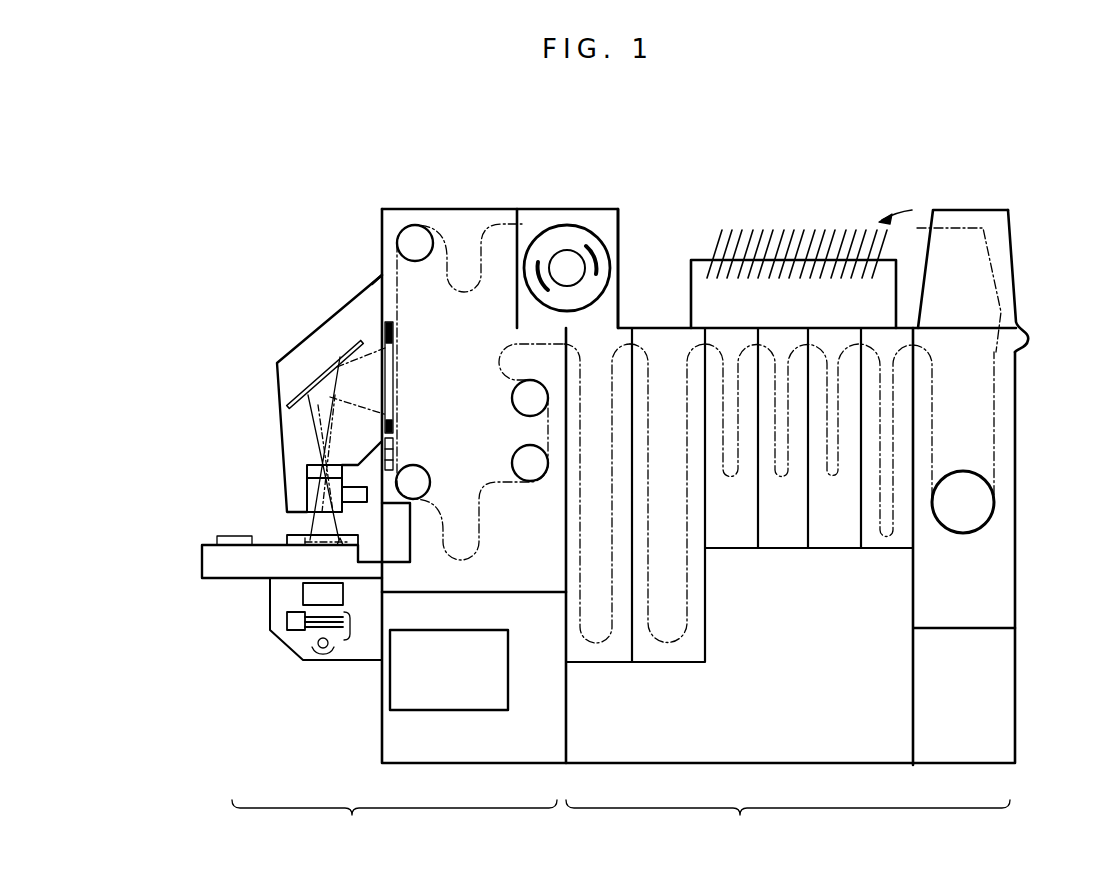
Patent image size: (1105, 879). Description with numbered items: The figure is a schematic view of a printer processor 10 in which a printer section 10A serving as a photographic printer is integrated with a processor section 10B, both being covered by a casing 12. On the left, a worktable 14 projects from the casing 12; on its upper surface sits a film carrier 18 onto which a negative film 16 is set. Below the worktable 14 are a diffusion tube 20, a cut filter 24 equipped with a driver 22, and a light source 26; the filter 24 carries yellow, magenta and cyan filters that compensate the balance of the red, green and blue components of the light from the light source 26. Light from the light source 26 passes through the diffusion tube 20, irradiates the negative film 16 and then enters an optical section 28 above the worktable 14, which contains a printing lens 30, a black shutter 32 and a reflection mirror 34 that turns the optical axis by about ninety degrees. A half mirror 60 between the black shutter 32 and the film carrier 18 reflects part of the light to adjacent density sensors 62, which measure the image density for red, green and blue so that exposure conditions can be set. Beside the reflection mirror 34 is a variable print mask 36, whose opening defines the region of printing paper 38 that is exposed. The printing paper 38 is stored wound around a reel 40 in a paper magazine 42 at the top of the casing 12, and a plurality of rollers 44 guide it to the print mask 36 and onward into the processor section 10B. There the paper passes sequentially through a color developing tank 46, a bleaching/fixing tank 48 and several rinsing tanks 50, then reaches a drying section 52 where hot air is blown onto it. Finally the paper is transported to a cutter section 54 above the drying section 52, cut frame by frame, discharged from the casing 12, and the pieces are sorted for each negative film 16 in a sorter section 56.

The printer processor 10 is at (666, 193).
The printer section 10A is at (394, 827).
The processor section 10B is at (788, 827).
The casing 12 is at (478, 209).
The worktable 14 is at (202, 566).
The negative film 16 is at (350, 530).
The film carrier 18 is at (295, 527).
The diffusion tube 20 is at (302, 592).
The driver 22 is at (293, 628).
The cut filter 24 is at (350, 630).
The light source 26 is at (308, 655).
The optical section 28 is at (277, 424).
The printing lens 30 is at (300, 473).
The black shutter 32 is at (287, 484).
The reflection mirror 34 is at (320, 378).
The variable print mask 36 is at (372, 285).
The printing paper 38 is at (397, 368).
The reel 40 is at (562, 250).
The paper magazine 42 is at (612, 209).
The rollers 44 is at (412, 226).
The color developing tank 46 is at (600, 664).
The bleaching/fixing tank 48 is at (672, 664).
The rinsing tanks 50 is at (733, 549).
The drying section 52 is at (1000, 552).
The cutter section 54 is at (1013, 262).
The sorter section 56 is at (700, 258).
The half mirror 60 is at (312, 498).
The density sensors 62 is at (393, 450).